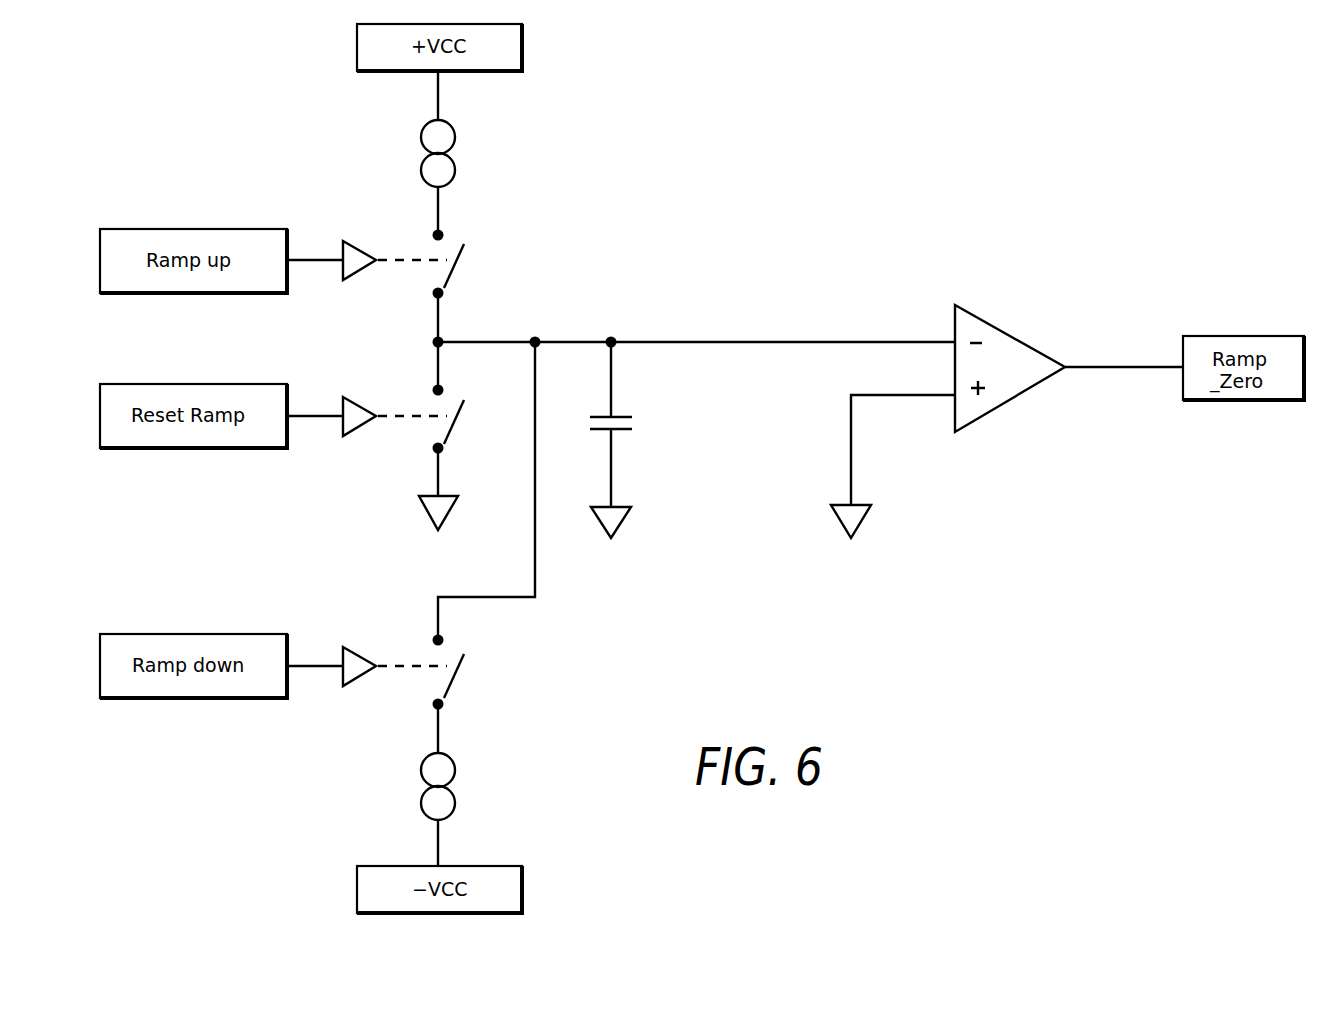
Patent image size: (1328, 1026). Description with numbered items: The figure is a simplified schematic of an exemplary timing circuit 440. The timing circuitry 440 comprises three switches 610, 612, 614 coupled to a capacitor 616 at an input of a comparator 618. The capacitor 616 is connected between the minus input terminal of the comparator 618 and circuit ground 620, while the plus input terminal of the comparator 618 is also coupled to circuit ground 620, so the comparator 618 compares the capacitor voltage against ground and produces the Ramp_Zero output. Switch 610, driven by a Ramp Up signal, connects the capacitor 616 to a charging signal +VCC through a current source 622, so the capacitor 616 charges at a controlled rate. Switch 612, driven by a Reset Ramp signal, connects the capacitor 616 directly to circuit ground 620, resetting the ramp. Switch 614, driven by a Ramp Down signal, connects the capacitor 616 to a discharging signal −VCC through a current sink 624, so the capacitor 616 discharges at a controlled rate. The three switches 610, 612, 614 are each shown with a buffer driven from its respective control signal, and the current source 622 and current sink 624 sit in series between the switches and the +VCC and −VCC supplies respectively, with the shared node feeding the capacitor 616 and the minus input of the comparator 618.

The timing circuit 440 is at (291, 134).
The switch 610 is at (357, 242).
The switch 612 is at (357, 398).
The switch 614 is at (355, 648).
The capacitor 616 is at (627, 413).
The comparator 618 is at (1019, 331).
The circuit ground 620 is at (624, 520).
The current source 622 is at (452, 124).
The current sink 624 is at (452, 757).